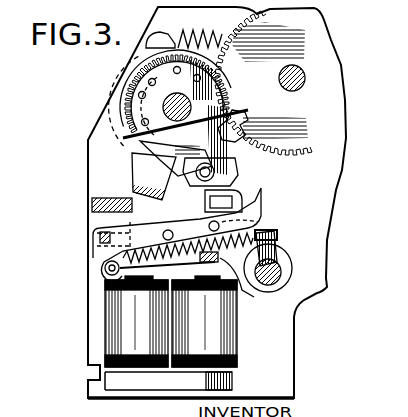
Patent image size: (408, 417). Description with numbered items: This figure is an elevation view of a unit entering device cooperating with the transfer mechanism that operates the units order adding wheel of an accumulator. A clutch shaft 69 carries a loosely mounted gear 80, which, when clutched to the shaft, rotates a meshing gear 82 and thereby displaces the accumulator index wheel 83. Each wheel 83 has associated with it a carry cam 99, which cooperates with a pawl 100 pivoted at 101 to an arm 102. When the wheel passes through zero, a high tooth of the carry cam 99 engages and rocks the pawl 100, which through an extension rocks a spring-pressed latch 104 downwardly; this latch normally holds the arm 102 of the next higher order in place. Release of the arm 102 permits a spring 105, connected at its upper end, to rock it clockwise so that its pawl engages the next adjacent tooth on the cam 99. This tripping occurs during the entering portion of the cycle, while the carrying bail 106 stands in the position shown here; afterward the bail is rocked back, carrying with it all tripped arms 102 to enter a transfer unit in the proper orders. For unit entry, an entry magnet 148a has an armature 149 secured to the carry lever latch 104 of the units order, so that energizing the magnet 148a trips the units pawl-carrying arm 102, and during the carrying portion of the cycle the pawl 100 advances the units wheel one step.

The clutch shaft 69 is at (294, 68).
The gear 80 is at (300, 127).
The gear 82 is at (135, 100).
The accumulator index wheel 83 is at (118, 105).
The carry cam 99 is at (143, 147).
The pawl 100 is at (232, 135).
The pivot 101 is at (230, 178).
The arm 102 is at (203, 205).
The latch 104 is at (243, 218).
The spring 105 is at (184, 30).
The carrying bail 106 is at (145, 176).
The entry magnet 148a is at (222, 338).
The armature 149 is at (256, 277).